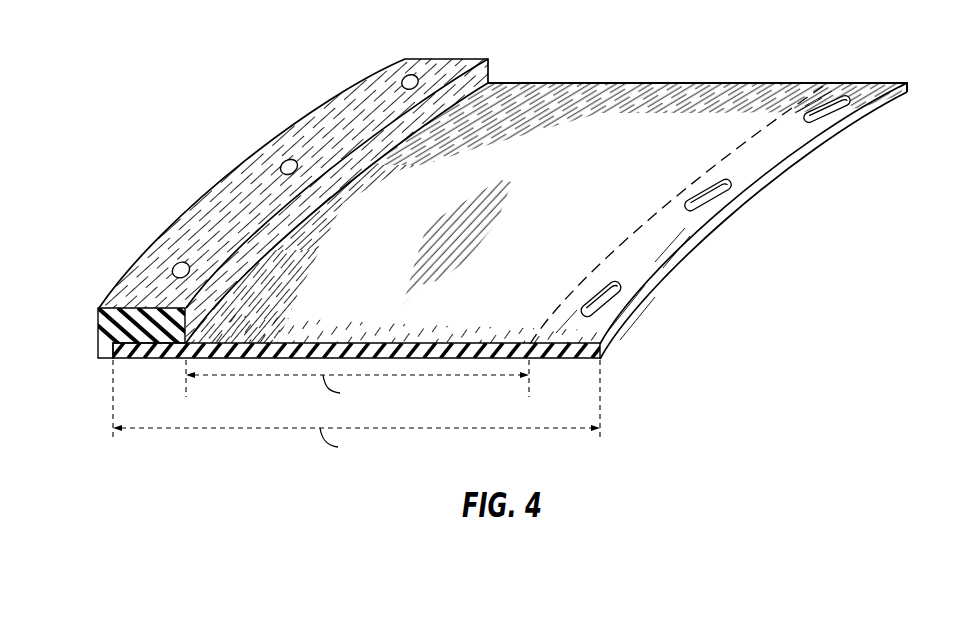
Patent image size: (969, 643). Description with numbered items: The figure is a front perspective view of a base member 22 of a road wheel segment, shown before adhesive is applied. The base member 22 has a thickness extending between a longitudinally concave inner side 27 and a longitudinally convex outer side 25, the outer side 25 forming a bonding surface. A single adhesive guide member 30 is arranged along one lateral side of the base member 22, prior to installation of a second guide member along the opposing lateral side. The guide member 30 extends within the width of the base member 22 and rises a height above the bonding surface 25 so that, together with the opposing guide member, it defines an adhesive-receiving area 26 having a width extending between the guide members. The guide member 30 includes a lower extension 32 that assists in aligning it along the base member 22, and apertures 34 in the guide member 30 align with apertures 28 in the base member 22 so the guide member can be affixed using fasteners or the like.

The base member 22 is at (474, 245).
The longitudinally convex outer side 25 is at (783, 148).
The adhesive-receiving area 26 is at (632, 98).
The longitudinally concave inner side 27 is at (560, 360).
The apertures 28 is at (833, 108).
The adhesive guide member 30 is at (293, 180).
The lower extension 32 is at (98, 349).
The apertures 34 is at (408, 80).